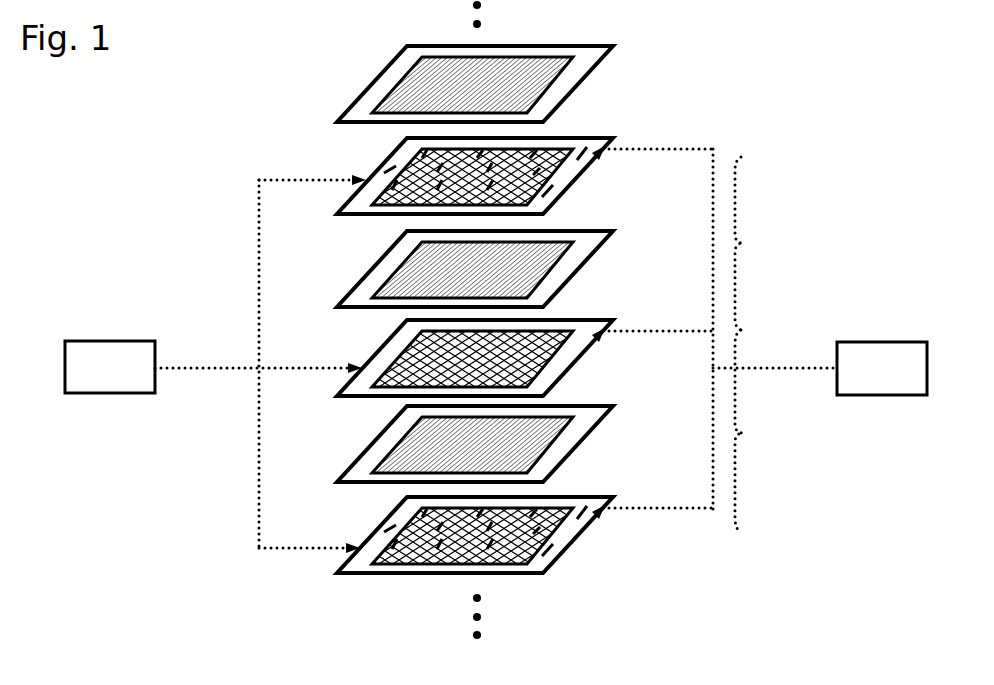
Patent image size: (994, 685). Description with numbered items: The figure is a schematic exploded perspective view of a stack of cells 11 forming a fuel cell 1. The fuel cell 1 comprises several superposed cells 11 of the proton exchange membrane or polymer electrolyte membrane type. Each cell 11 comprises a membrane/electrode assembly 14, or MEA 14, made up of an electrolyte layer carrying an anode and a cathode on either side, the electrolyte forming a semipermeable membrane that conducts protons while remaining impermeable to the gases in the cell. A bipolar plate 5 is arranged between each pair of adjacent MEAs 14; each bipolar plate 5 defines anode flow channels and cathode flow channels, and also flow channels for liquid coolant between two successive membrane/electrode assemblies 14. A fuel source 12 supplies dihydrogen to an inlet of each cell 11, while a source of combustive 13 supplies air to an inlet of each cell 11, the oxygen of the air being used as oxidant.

The fuel cell 1 is at (752, 55).
The bipolar plate 5 is at (580, 174).
The cell 11 is at (758, 345).
The fuel source 12 is at (96, 380).
The source of combustive 13 is at (868, 381).
The membrane/electrode assembly 14 is at (491, 260).